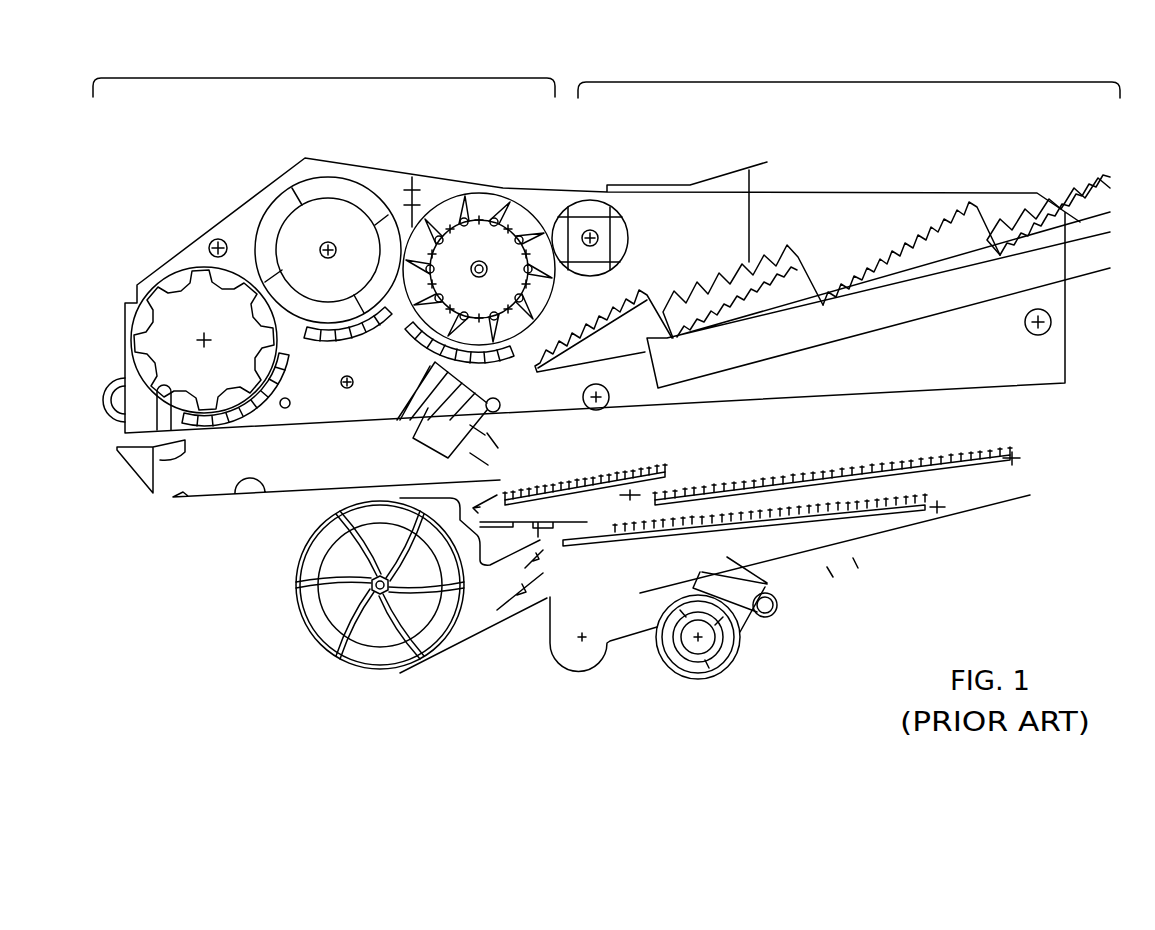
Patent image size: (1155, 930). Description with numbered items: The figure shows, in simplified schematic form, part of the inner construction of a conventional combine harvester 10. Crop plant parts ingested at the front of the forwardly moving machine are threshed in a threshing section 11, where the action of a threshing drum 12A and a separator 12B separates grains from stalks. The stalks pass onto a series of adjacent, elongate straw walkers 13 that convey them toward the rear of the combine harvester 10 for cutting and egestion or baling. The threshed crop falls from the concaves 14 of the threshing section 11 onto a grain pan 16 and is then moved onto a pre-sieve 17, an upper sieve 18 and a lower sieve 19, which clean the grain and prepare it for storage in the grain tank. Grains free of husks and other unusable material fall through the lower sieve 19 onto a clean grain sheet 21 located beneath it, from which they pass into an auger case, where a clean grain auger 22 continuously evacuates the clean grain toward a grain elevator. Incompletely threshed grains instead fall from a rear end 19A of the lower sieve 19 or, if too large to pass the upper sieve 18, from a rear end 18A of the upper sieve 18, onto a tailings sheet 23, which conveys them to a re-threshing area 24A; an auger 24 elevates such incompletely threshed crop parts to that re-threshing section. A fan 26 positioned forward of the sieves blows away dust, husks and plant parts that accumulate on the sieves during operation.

The combine harvester 10 is at (572, 135).
The threshing section 11 is at (305, 78).
The straw walkers 13 is at (848, 82).
The threshing drum 12A is at (207, 293).
The separator 12B is at (483, 200).
The concaves 14 is at (420, 338).
The re-threshing area 24A is at (413, 438).
The grain pan 16 is at (240, 496).
The pre-sieve 17 is at (580, 482).
The upper sieve 18 is at (728, 485).
The rear end of upper sieve 18A is at (1003, 458).
The lower sieve 19 is at (627, 543).
The rear end of lower sieve 19A is at (1030, 495).
The clean grain sheet 21 is at (750, 557).
The clean grain auger 22 is at (580, 655).
The tailings sheet 23 is at (817, 573).
The auger 24 is at (698, 640).
The fan 26 is at (325, 640).